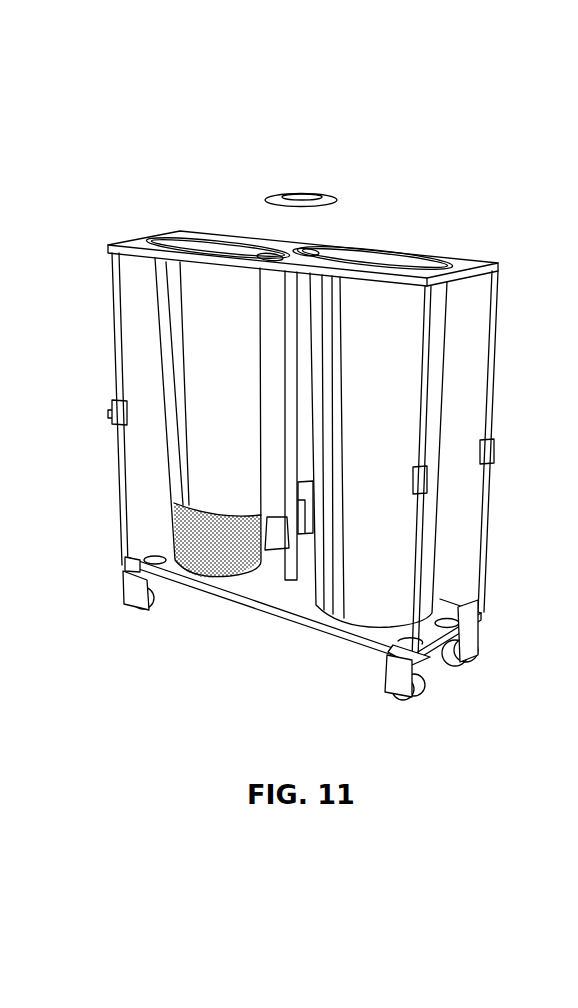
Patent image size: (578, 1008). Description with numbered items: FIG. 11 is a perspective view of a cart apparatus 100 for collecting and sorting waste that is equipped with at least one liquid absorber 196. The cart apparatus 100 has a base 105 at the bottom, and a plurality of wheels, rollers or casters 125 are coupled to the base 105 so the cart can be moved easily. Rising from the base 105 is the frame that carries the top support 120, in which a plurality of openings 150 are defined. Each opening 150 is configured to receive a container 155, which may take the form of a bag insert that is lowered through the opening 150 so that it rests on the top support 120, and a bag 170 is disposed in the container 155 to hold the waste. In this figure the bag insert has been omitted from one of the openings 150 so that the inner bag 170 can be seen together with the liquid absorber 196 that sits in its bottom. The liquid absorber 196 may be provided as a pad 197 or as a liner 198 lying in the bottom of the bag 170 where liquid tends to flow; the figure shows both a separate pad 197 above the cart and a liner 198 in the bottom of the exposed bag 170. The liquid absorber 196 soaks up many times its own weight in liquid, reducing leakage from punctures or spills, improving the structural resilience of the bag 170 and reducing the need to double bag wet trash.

The cart apparatus 100 is at (184, 130).
The base 105 is at (353, 600).
The top support 120 is at (466, 265).
The casters 125 is at (457, 662).
The opening 150 is at (178, 240).
The container 155 is at (305, 540).
The bag 170 is at (178, 423).
The liquid absorber 196 is at (202, 401).
The pad 197 is at (293, 192).
The liner 198 is at (228, 558).